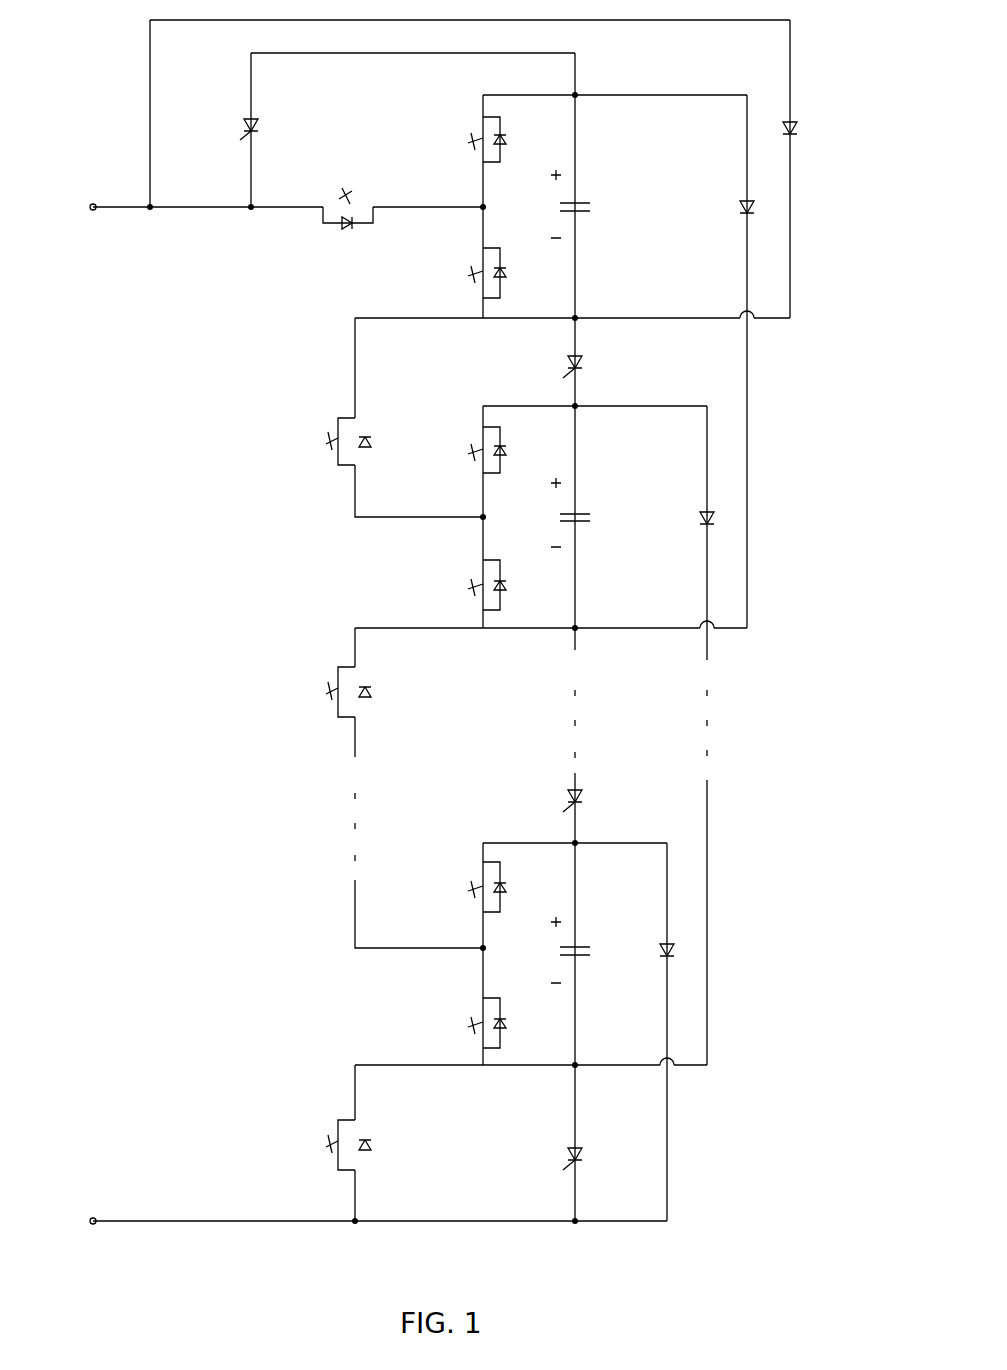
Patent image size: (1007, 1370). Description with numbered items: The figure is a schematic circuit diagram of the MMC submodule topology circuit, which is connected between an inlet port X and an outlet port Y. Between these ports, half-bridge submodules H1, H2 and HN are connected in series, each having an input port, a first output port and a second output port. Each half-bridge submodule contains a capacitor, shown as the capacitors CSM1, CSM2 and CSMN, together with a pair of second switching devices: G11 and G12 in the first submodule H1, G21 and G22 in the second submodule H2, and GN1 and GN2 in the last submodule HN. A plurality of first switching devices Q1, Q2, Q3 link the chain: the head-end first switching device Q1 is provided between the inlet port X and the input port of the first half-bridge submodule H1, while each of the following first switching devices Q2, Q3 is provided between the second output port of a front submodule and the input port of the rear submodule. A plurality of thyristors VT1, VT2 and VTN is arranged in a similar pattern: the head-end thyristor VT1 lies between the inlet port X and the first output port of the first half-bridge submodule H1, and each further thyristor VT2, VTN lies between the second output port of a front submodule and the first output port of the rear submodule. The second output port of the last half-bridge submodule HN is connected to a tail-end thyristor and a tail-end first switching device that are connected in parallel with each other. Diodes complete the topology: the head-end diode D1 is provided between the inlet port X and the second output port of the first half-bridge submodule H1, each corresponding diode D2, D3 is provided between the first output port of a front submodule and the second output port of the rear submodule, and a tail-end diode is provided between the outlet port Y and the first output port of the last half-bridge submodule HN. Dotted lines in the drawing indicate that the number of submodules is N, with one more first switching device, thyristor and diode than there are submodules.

The inlet port X is at (73, 222).
The outlet port Y is at (74, 1211).
The head-end thyristor VT1 is at (219, 127).
The thyristor VT2 is at (596, 366).
The thyristor VTN is at (597, 799).
The head-end first switching device Q1 is at (348, 188).
The first switching device Q2 is at (326, 441).
The first switching device Q3 is at (326, 692).
The second switching device G11 is at (461, 139).
The second switching device G12 is at (461, 273).
The second switching device G21 is at (461, 450).
The second switching device G22 is at (461, 585).
The second switching device GN1 is at (457, 887).
The second switching device GN2 is at (457, 1023).
The half-bridge submodule H1 is at (615, 82).
The half-bridge submodule H2 is at (595, 386).
The half-bridge submodule HN is at (575, 823).
The capacitor CSM1 is at (620, 206).
The capacitor CSM2 is at (615, 513).
The capacitor CSMN is at (609, 942).
The head-end diode D1 is at (812, 131).
The diode D2 is at (727, 361).
The diode D3 is at (692, 735).